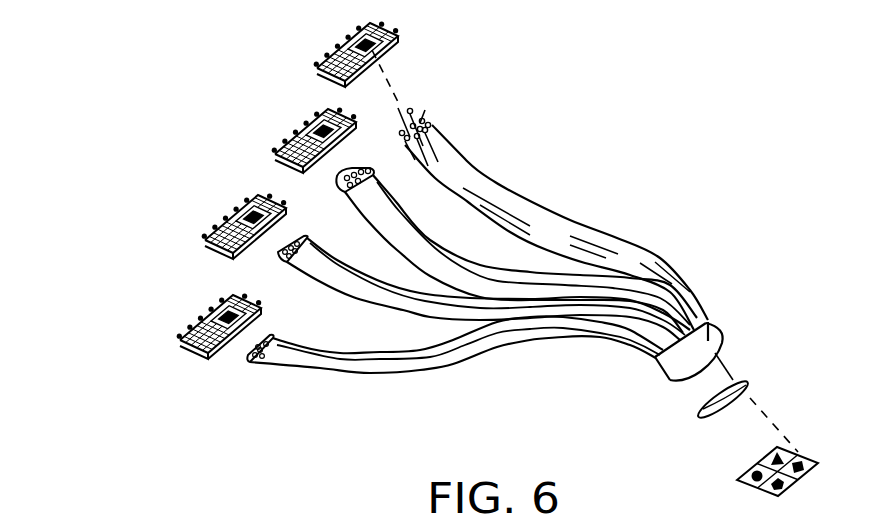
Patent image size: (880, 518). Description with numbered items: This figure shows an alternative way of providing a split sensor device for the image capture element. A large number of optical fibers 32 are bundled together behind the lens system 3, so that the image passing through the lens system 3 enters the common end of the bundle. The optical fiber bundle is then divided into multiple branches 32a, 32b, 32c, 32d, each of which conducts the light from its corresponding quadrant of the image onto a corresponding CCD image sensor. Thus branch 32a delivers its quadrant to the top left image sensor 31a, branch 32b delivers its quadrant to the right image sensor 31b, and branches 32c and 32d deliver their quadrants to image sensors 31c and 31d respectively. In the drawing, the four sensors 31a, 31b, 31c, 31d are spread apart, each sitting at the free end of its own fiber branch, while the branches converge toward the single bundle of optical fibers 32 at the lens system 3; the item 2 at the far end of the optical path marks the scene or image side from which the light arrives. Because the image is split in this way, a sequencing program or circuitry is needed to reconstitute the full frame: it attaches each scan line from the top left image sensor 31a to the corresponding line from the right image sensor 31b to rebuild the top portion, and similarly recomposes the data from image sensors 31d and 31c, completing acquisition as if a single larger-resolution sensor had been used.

The CCD image sensor 31b is at (313, 77).
The CCD image sensor 31a is at (273, 157).
The CCD image sensor 31c is at (202, 245).
The CCD image sensor 31d is at (180, 343).
The optical fiber bundle branch 32b is at (433, 127).
The optical fiber bundle branch 32a is at (393, 202).
The optical fiber bundle branch 32c is at (297, 268).
The optical fiber bundle branch 32d is at (293, 367).
The optical fibers 32 is at (708, 318).
The lens system 3 is at (753, 392).
The illuminated target (reticle) 2 is at (705, 467).